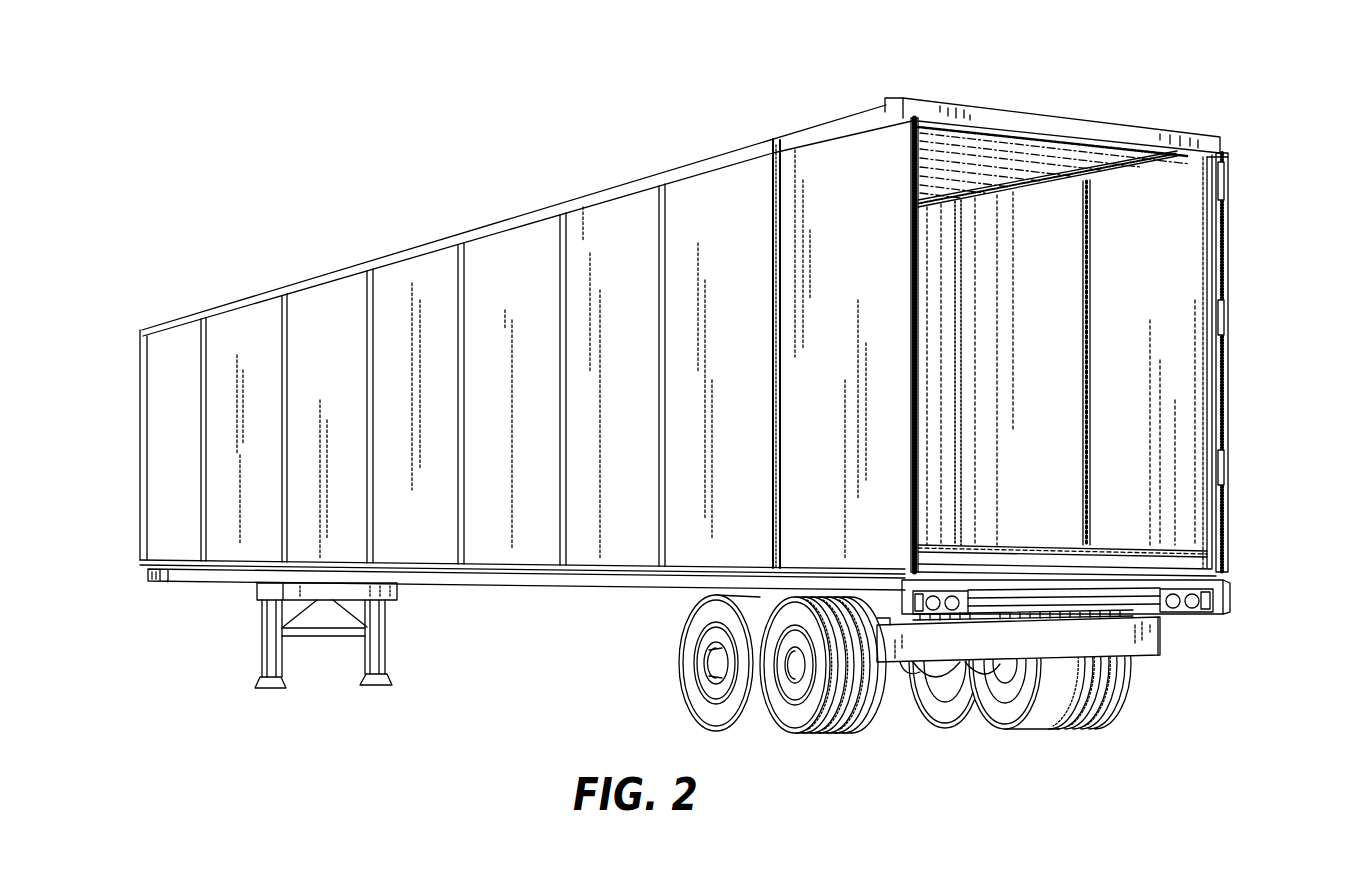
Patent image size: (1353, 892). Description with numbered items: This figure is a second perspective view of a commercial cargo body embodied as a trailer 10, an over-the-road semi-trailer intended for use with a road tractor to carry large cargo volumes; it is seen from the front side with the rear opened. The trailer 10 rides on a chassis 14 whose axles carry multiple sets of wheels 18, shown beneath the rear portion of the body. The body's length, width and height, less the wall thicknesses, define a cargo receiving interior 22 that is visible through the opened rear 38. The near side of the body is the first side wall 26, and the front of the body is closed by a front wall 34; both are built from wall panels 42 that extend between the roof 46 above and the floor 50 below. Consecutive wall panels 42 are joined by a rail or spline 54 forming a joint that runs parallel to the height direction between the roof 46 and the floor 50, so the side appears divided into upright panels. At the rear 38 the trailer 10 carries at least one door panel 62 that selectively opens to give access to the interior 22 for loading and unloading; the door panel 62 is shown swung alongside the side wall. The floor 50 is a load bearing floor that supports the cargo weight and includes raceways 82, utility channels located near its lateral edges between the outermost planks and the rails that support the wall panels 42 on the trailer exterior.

The trailer 10 is at (233, 150).
The chassis 14 is at (215, 577).
The wheels 18 is at (870, 730).
The cargo receiving interior 22 is at (1028, 256).
The first side wall 26 is at (505, 540).
The front wall 34 is at (122, 465).
The rear 38 is at (1266, 211).
The wall panels 42 is at (521, 327).
The roof 46 is at (497, 216).
The floor 50 is at (593, 582).
The rail or spline 54 is at (556, 440).
The door panel 62 is at (866, 237).
The raceways 82 is at (686, 561).